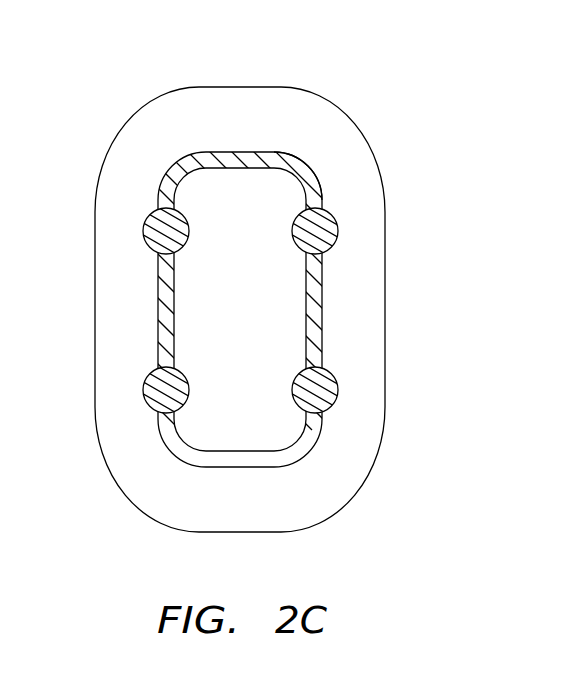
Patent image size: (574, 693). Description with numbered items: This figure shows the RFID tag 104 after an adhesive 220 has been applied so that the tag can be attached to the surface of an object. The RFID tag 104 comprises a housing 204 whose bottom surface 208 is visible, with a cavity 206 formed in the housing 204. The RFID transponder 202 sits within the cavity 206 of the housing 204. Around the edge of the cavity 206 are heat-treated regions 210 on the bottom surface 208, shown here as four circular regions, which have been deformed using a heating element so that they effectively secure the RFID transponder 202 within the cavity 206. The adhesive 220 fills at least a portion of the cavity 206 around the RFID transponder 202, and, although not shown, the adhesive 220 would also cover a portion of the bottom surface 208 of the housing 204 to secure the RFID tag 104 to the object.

The RFID tag 104 is at (122, 65).
The RFID transponder 202 is at (260, 323).
The housing 204 is at (242, 88).
The cavity 206 is at (170, 437).
The bottom surface 208 is at (177, 153).
The heat-treated regions 210 is at (145, 233).
The adhesive 220 is at (308, 168).